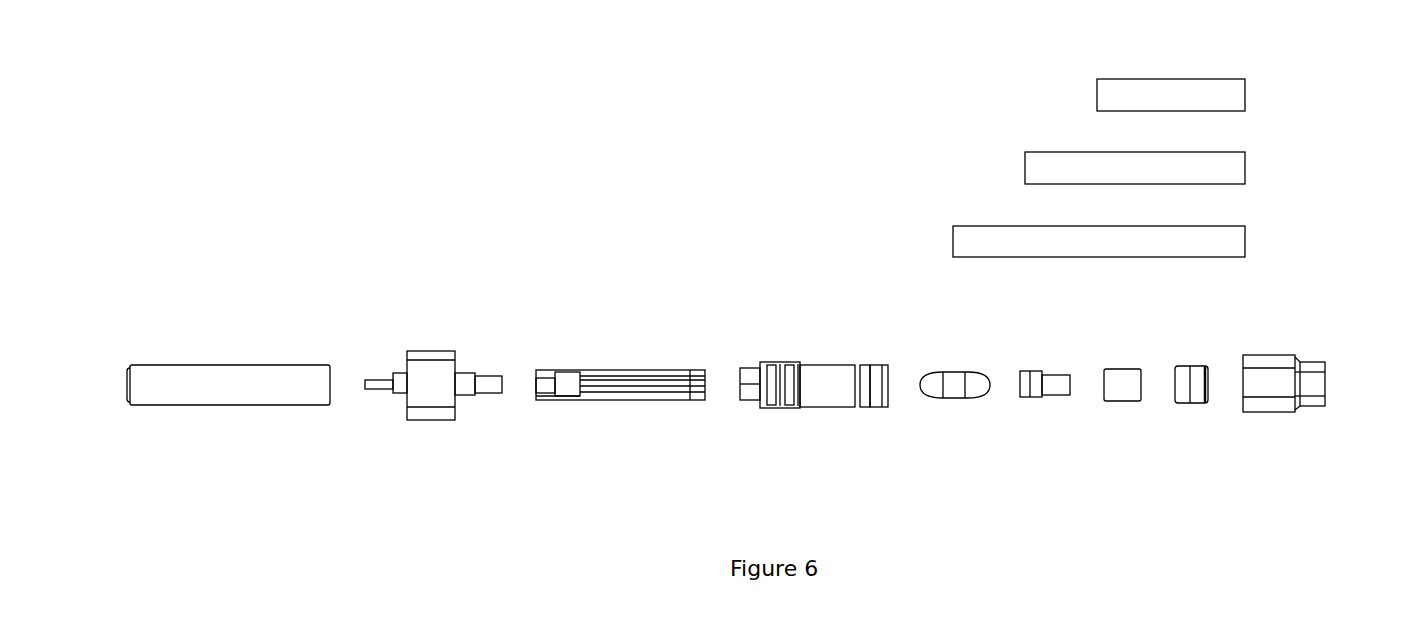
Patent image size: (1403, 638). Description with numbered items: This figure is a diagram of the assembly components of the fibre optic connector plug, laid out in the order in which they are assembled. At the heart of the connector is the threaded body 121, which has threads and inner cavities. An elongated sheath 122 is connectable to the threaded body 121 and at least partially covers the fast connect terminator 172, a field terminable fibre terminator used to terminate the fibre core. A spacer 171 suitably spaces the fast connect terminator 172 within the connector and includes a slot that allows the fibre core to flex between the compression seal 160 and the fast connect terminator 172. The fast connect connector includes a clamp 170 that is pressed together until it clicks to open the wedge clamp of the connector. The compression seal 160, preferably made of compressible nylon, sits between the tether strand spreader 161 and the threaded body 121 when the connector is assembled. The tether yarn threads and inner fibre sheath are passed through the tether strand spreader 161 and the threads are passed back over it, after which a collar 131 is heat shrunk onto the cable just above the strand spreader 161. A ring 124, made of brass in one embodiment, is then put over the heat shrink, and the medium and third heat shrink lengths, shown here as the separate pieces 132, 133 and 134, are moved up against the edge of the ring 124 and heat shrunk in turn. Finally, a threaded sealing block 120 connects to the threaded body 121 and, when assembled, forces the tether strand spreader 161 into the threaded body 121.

The threaded sealing block 120 is at (1272, 383).
The threaded body 121 is at (822, 388).
The elongated sheath 122 is at (213, 388).
The ring 124 is at (1185, 387).
The collar 131 is at (1122, 385).
The first layer 132 is at (966, 240).
The second layer 133 is at (1037, 168).
The third layer 134 is at (1113, 96).
The compression seal 160 is at (952, 388).
The tether strand spreader 161 is at (1032, 388).
The clamp 170 is at (423, 402).
The spacer 171 is at (590, 398).
The fast connect terminator 172 is at (465, 387).